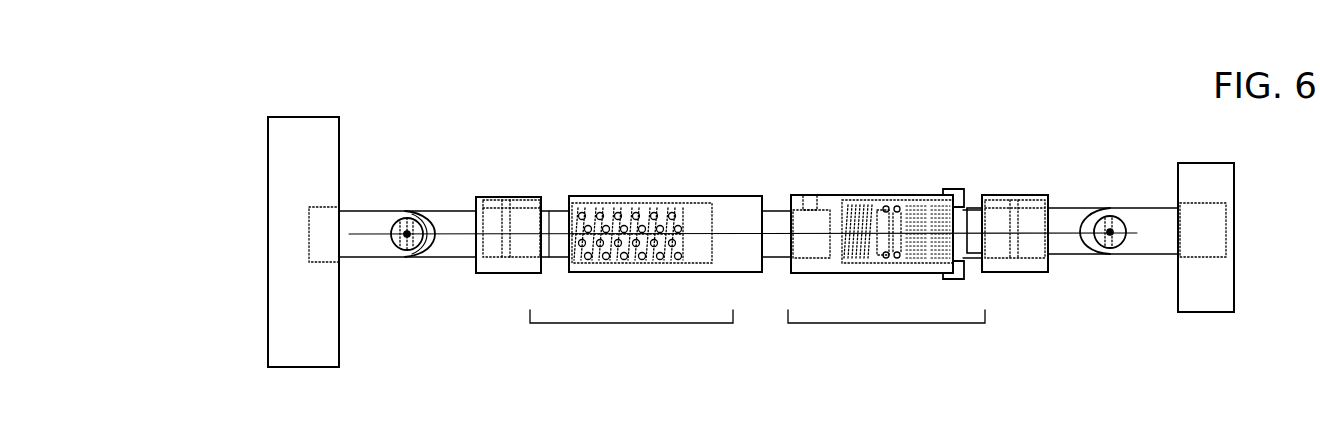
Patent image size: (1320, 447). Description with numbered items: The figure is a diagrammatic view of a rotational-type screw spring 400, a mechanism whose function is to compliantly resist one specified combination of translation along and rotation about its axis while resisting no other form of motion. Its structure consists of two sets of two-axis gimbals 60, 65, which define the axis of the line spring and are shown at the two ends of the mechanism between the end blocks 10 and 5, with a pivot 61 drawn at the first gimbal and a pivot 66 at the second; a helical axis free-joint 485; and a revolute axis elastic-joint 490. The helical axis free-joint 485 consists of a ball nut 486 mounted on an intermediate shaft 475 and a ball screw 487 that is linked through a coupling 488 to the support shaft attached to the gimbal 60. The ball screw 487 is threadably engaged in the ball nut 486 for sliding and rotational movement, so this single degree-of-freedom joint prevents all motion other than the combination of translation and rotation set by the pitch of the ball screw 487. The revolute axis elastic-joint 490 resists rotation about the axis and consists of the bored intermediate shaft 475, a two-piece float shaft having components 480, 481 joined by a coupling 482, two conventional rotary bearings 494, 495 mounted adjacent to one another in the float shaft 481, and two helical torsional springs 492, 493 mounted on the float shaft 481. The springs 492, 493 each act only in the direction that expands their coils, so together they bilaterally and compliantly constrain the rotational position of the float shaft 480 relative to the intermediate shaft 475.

The second unit 5 is at (1196, 199).
The first unit 10 is at (286, 161).
The 2-axis gimbal 60 is at (397, 280).
The first pivot 61 is at (407, 220).
The 2-axis gimbal 65 is at (1107, 270).
The second pivot 66 is at (1118, 218).
The rotational-type screw spring 400 is at (765, 147).
The intermediate shaft 475 is at (773, 207).
The float shaft 480 is at (1073, 202).
The float shaft 481 is at (970, 203).
The coupling 482 is at (1020, 187).
The helical axis free-joint 485 is at (631, 332).
The ball nut 486 is at (693, 192).
The ball screw 487 is at (550, 207).
The coupling 488 is at (498, 278).
The revolute axis elastic-joint 490 is at (886, 277).
The helical torsional spring 492 is at (855, 200).
The helical torsional spring 493 is at (927, 203).
The rotary bearing 494 is at (887, 195).
The rotary bearing 495 is at (900, 195).